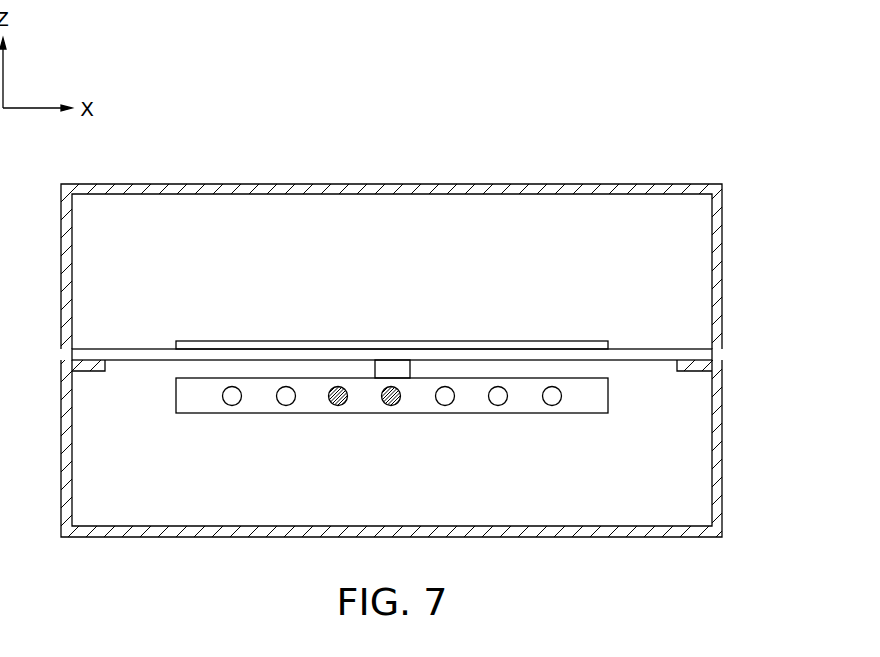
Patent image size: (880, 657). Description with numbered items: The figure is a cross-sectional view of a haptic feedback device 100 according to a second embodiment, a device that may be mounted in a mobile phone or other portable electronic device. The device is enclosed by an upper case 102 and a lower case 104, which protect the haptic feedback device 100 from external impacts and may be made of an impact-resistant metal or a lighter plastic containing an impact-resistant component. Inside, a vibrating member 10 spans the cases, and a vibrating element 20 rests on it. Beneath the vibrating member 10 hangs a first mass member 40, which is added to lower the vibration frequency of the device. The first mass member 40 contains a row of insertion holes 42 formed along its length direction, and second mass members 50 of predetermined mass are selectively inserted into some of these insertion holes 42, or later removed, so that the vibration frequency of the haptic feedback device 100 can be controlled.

The haptic feedback device 100 is at (440, 315).
The upper case 102 is at (723, 273).
The lower case 104 is at (723, 460).
The vibrating member 10 is at (335, 355).
The vibrating element 20 is at (453, 344).
The first mass member 40 is at (392, 422).
The insertion holes 42 is at (445, 405).
The second mass members 50 is at (388, 405).